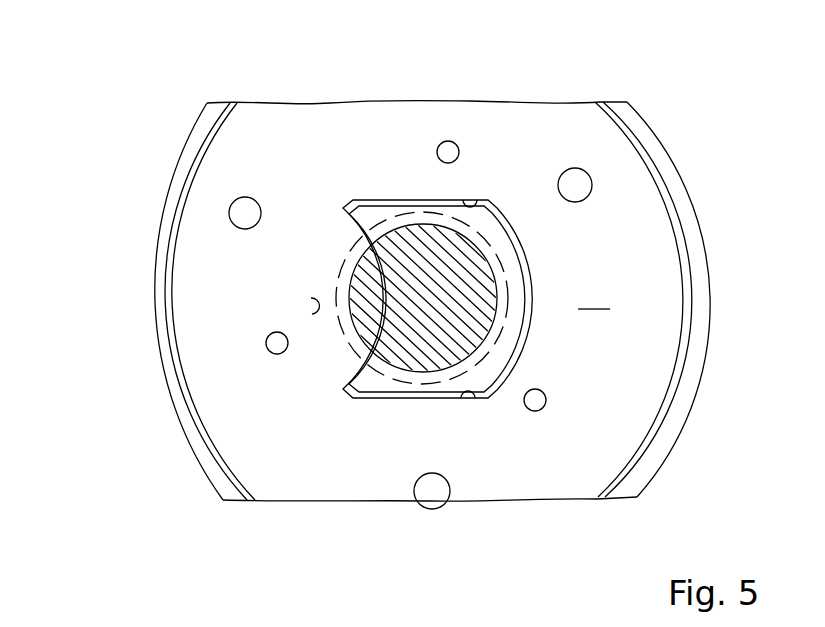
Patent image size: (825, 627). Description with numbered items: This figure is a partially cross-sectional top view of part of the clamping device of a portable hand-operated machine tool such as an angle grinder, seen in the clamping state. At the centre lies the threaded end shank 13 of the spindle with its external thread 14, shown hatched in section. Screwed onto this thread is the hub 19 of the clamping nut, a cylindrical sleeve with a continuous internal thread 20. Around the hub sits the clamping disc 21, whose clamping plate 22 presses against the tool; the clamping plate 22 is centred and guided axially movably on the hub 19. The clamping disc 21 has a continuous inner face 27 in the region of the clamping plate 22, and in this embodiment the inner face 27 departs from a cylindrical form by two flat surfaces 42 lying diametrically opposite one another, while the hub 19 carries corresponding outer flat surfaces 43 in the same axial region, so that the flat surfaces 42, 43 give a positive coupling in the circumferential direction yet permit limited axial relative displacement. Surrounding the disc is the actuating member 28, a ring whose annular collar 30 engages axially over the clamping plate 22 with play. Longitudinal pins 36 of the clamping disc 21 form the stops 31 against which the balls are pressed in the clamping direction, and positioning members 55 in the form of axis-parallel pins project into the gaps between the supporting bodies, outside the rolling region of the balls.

The threaded end shank 13 is at (387, 281).
The external thread 14 is at (376, 336).
The hub 19 is at (500, 237).
The internal thread 20 is at (476, 228).
The clamping disc 21 is at (653, 262).
The clamping plate 22 is at (594, 295).
The inner face 27 is at (318, 301).
The actuating member 28 is at (708, 330).
The annular collar 30 is at (643, 124).
The stops 31 is at (229, 215).
The longitudinal pins 36 is at (248, 205).
The flat surfaces 42 is at (479, 201).
The outer flat surfaces 43 is at (388, 398).
The positioning members 55 is at (441, 145).